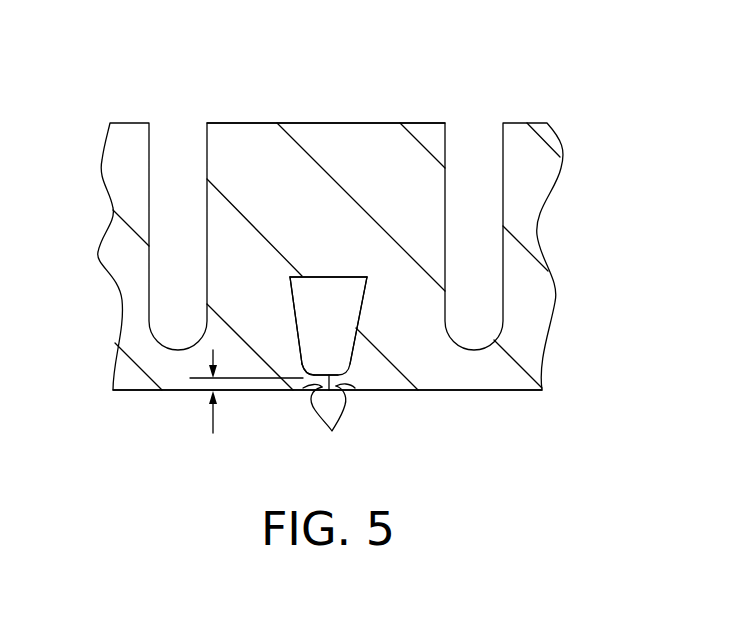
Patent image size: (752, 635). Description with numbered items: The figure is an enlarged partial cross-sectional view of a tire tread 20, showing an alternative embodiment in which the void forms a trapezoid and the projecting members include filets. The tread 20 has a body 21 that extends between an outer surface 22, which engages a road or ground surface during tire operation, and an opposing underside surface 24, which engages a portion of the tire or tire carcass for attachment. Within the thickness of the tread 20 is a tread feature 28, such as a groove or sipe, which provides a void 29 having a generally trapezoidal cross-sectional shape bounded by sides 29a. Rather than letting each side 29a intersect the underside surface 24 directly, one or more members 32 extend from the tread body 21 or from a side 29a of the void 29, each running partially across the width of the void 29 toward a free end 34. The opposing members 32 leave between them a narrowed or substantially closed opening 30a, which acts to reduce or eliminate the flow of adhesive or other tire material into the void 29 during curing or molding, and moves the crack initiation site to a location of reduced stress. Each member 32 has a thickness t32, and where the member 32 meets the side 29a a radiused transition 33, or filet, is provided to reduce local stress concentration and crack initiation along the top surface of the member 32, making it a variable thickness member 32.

The tread 20 is at (632, 180).
The body 21 is at (543, 305).
The outer surface 22 is at (357, 123).
The underside surface 24 is at (500, 391).
The tread feature 28 is at (335, 276).
The void 29 is at (320, 287).
The side 29a is at (293, 300).
The narrowed or closed opening 30a is at (329, 375).
The member 32 is at (302, 388).
The transition 33 is at (309, 374).
The free end 34 is at (330, 424).
The thickness of member t32 is at (212, 414).